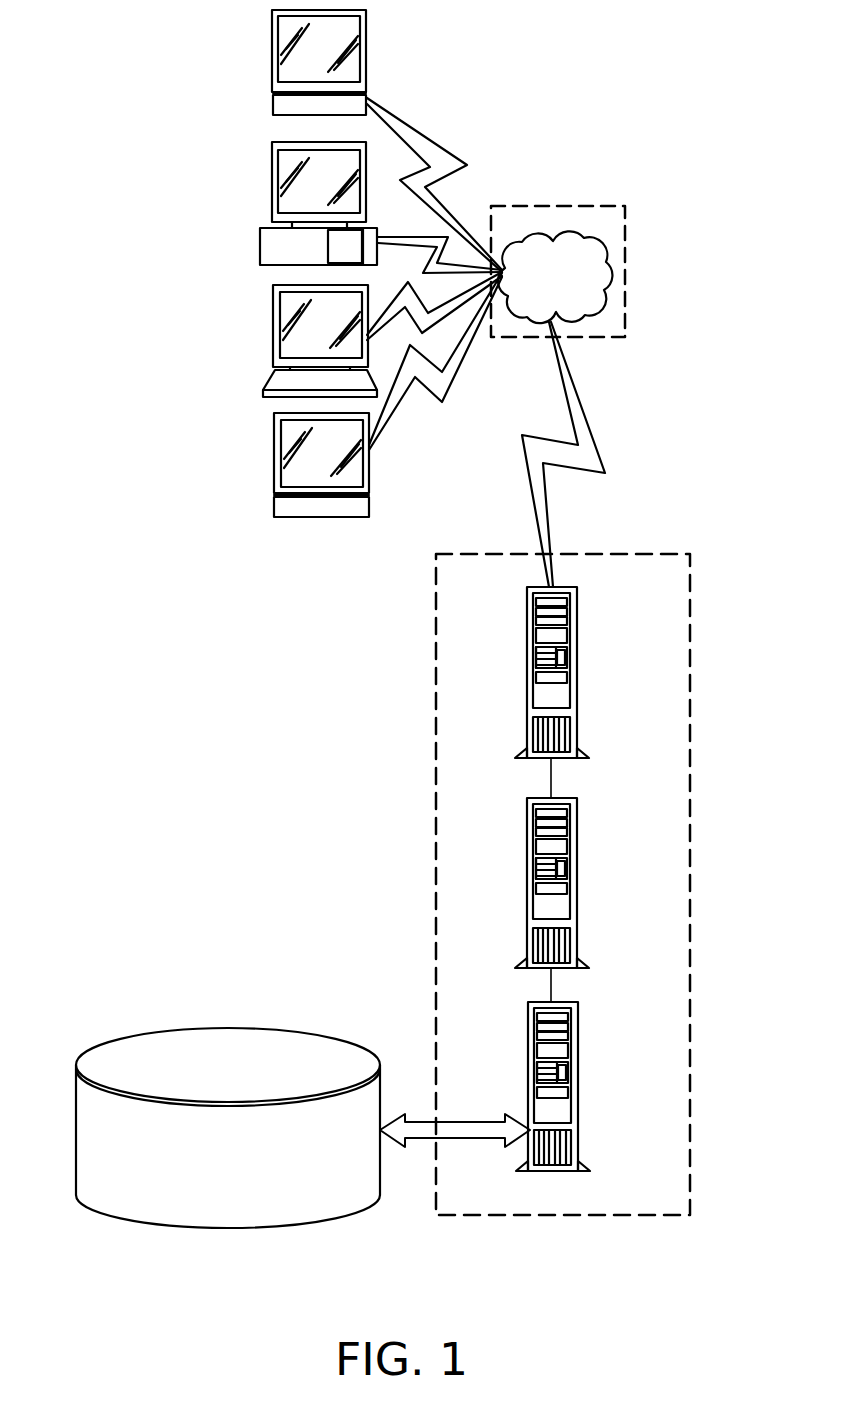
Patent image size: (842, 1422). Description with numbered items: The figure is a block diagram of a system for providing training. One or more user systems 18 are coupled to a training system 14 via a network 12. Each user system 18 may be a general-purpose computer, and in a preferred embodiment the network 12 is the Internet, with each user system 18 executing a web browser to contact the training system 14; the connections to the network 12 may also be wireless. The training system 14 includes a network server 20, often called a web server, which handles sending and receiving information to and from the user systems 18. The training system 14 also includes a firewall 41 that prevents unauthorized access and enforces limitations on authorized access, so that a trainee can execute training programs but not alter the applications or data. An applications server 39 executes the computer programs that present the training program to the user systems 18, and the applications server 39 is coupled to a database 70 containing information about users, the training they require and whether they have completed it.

The network 12 is at (587, 205).
The training system 14 is at (691, 717).
The user systems 18 is at (272, 44).
The network server 20 is at (577, 650).
The applications server 39 is at (578, 1050).
The firewall 41 is at (577, 851).
The database 70 is at (237, 1048).